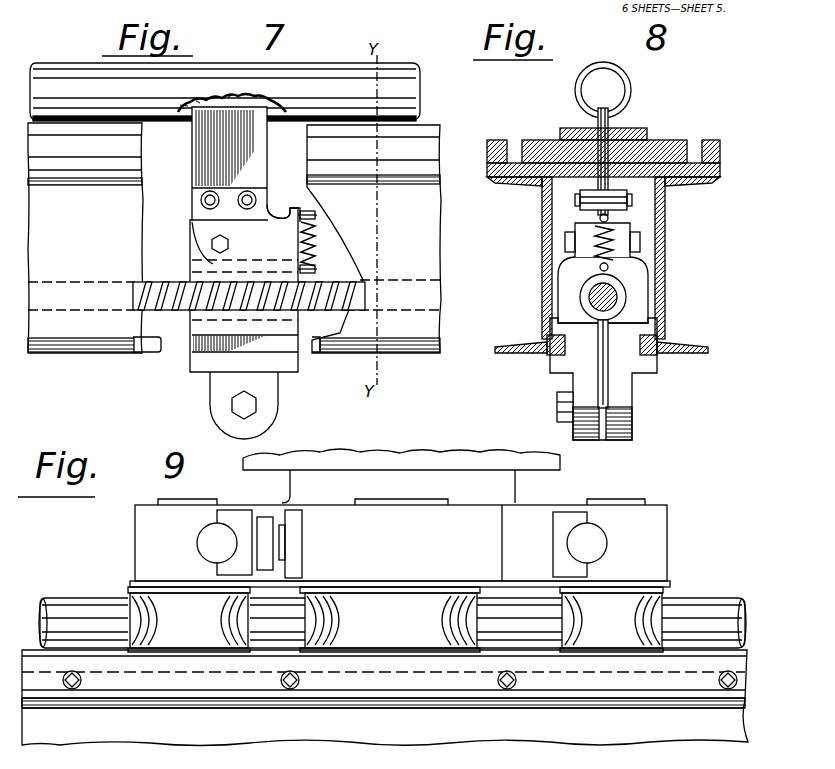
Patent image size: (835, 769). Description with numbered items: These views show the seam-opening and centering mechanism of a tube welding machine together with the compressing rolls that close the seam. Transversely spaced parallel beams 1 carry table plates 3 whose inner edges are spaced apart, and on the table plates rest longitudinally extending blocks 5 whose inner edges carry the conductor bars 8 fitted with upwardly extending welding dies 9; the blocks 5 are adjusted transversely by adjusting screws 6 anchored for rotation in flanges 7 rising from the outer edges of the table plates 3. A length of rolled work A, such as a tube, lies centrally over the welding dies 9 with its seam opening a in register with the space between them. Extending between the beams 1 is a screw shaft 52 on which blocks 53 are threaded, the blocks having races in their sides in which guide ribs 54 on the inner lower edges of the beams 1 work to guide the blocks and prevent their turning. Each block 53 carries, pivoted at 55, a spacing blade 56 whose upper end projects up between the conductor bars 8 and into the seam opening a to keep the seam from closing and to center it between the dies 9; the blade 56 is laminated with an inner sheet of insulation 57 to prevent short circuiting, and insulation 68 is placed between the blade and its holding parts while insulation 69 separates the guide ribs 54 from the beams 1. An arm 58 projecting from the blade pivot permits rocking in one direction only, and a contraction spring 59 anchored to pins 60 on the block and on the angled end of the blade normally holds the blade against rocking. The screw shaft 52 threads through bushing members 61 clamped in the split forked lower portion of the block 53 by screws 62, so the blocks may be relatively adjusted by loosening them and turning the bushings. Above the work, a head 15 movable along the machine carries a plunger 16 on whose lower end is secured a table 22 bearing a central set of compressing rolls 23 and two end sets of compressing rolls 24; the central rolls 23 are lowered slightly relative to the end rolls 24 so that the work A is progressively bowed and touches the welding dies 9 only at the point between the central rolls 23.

In FIG. 7, the beam 1 is at (94, 238).
In FIG. 8, the beam 1 is at (540, 256).
In FIG. 9, the beam 1 is at (435, 738).
In FIG. 8, the table plate 3 is at (492, 178).
In FIG. 9, the table plate 3 is at (430, 697).
In FIG. 8, the block 5 is at (535, 140).
In FIG. 9, the adjusting screw 6 is at (373, 658).
In FIG. 7, the flange 7 is at (410, 153).
In FIG. 8, the flange 7 is at (494, 140).
In FIG. 9, the flange 7 is at (395, 685).
In FIG. 8, the conductor bar 8 is at (566, 131).
In FIG. 8, the welding die 9 is at (627, 142).
In FIG. 9, the welding die 9 is at (742, 650).
In FIG. 9, the head 15 is at (403, 457).
In FIG. 9, the plunger 16 is at (398, 486).
In FIG. 9, the table 22 is at (401, 540).
In FIG. 9, the central set of work compressing rolls 23 is at (390, 619).
In FIG. 9, the end set of work compressing rolls 24 is at (395, 619).
In FIG. 7, the screw shaft 52 is at (165, 290).
In FIG. 8, the screw shaft 52 is at (612, 306).
In FIG. 7, the block 53 is at (197, 332).
In FIG. 8, the block 53 is at (603, 379).
In FIG. 8, the guide rib 54 is at (574, 332).
In FIG. 7, the pivot 55 is at (211, 244).
In FIG. 7, the spacing blade 56 is at (244, 239).
In FIG. 8, the spacing blade 56 is at (650, 140).
In FIG. 8, the sheet of insulation 57 is at (603, 90).
In FIG. 7, the arm 58 is at (284, 212).
In FIG. 7, the contraction spring 59 is at (314, 242).
In FIG. 8, the contraction spring 59 is at (597, 242).
In FIG. 7, the pin 60 is at (314, 214).
In FIG. 8, the pin 60 is at (600, 216).
In FIG. 8, the bushing member 61 is at (620, 293).
In FIG. 8, the screw 62 is at (557, 405).
In FIG. 8, the insulation 68 is at (627, 196).
In FIG. 8, the insulation 69 is at (545, 352).
In FIG. 7, the work A is at (225, 92).
In FIG. 9, the work A is at (423, 576).
In FIG. 7, the seam opening a is at (192, 118).